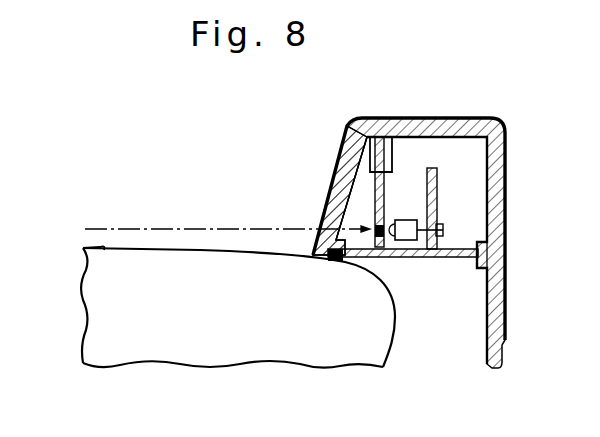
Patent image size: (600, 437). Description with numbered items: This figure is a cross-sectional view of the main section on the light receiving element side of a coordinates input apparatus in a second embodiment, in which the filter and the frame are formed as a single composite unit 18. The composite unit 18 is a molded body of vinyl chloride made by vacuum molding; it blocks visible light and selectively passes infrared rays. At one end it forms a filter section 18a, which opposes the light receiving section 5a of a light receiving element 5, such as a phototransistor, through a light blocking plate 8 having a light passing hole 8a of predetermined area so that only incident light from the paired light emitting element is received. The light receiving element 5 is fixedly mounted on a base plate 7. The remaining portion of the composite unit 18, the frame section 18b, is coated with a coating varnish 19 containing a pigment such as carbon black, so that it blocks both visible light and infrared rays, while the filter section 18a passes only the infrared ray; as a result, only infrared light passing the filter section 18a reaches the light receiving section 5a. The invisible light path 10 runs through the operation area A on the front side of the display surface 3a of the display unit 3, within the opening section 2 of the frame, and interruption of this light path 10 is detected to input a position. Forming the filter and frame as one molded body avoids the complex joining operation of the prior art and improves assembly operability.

The opening section 2 is at (208, 195).
The display unit 3 is at (82, 307).
The display surface 3a is at (100, 246).
The light receiving element 5 is at (402, 219).
The light receiving section 5a is at (384, 150).
The base plate 7 is at (437, 198).
The light blocking plate 8 is at (383, 148).
The light passing hole 8a is at (358, 199).
The light path 10 is at (167, 228).
The composite unit 18 is at (421, 220).
The filter section 18a is at (333, 218).
The frame section 18b is at (495, 170).
The coating varnish 19 is at (505, 130).
The operation area A is at (148, 218).